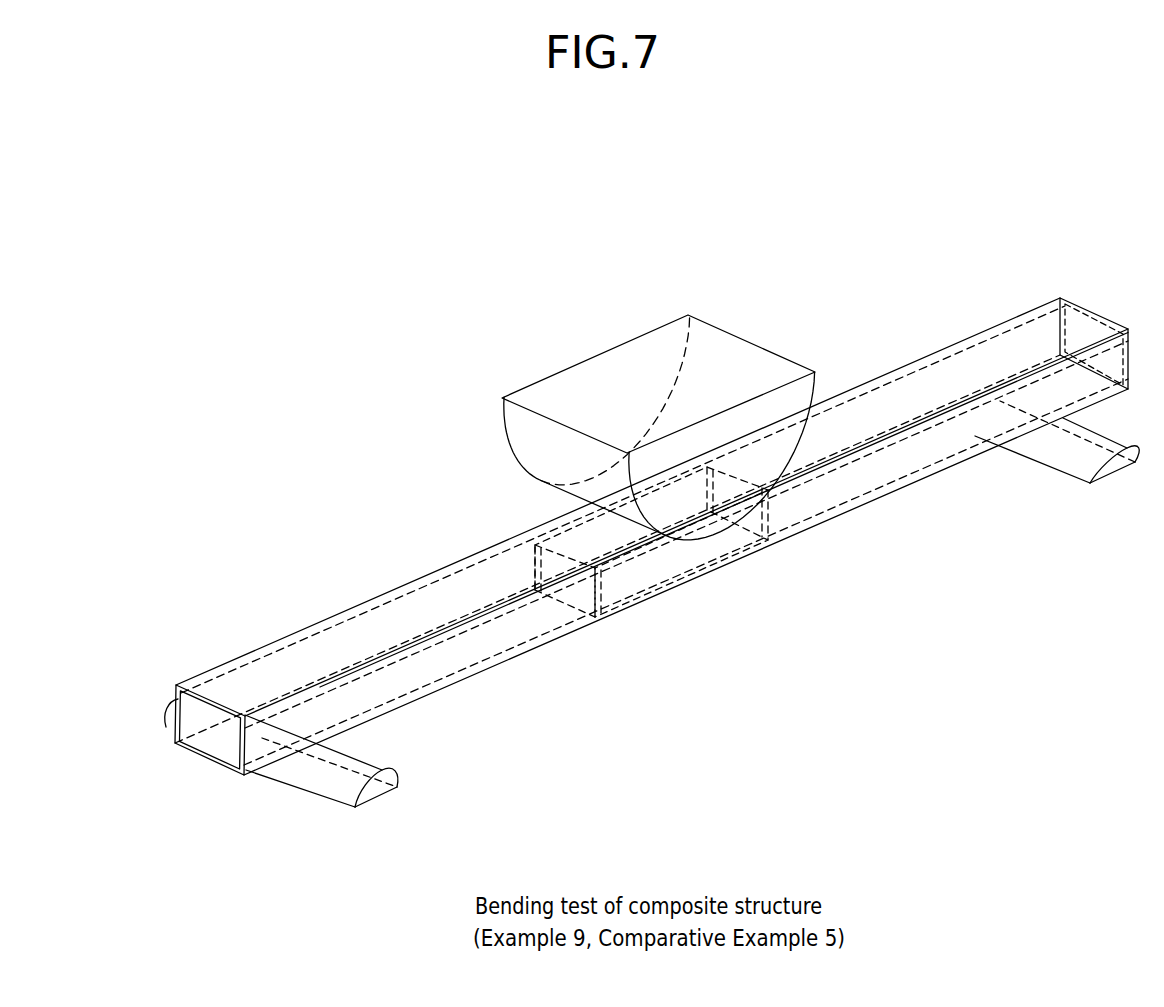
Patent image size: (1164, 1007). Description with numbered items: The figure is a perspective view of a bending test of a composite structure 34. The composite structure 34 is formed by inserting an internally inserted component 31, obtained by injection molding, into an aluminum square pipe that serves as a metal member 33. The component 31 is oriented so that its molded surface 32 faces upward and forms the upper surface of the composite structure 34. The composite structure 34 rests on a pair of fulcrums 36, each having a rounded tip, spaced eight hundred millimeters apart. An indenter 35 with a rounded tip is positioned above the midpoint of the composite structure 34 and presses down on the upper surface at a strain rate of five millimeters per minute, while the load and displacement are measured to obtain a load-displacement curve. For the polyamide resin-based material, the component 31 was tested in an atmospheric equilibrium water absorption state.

The internally inserted component 31 is at (575, 592).
The molded surface 32 is at (586, 527).
The metal member 33 is at (1068, 324).
The composite structure 34 is at (877, 513).
The indenter 35 is at (585, 372).
The fulcrum 36 is at (340, 790).